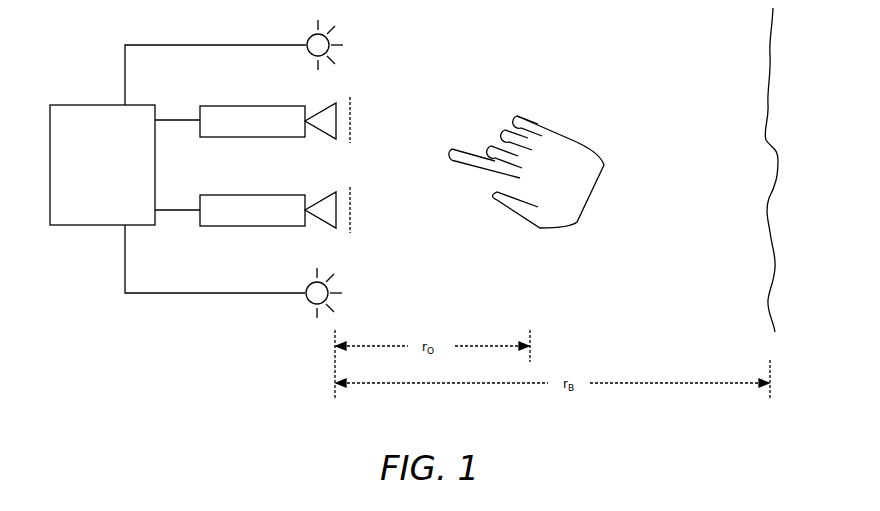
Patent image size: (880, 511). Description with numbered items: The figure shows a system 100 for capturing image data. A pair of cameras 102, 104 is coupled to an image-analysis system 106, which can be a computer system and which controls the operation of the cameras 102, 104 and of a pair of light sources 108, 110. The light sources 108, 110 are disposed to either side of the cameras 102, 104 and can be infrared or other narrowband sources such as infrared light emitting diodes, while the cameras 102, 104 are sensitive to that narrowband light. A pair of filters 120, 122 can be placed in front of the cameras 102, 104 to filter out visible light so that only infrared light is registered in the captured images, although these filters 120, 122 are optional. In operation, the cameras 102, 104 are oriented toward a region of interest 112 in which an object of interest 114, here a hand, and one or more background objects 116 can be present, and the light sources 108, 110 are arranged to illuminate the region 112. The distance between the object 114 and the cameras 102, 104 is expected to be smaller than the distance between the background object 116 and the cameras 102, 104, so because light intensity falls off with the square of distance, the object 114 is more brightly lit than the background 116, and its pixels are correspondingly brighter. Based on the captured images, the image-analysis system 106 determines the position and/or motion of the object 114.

The system 100 is at (76, 56).
The camera 102 is at (241, 104).
The camera 104 is at (238, 228).
The image-analysis system 106 is at (80, 228).
The light source 108 is at (304, 42).
The light source 110 is at (305, 300).
The region of interest 112 is at (461, 245).
The object of interest 114 is at (572, 142).
The background object 116 is at (766, 301).
The filter 120 is at (353, 105).
The filter 122 is at (353, 196).